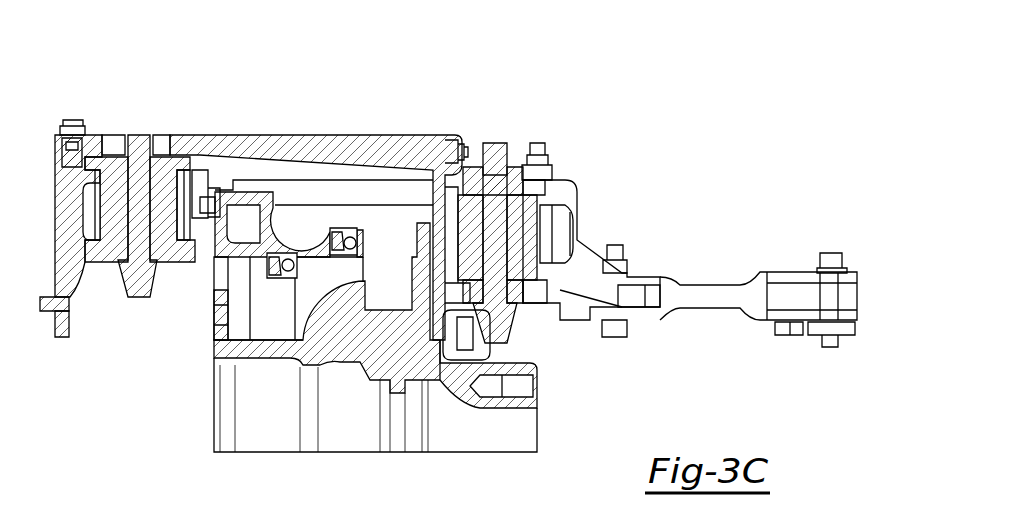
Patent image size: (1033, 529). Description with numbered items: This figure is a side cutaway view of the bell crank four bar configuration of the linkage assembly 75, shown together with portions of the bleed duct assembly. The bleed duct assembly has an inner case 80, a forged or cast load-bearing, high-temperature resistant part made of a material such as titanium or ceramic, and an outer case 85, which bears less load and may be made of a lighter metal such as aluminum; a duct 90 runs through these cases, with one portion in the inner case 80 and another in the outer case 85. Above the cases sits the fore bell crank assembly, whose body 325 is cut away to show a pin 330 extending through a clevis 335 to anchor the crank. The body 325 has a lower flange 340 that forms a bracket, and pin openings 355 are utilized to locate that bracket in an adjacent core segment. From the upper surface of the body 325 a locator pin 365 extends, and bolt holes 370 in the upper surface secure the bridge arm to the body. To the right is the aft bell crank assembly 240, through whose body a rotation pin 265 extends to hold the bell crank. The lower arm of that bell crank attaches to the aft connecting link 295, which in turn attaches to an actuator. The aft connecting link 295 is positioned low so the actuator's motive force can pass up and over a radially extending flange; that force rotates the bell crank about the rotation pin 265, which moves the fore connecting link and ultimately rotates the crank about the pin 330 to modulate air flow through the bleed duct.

The linkage assembly 75 is at (226, 255).
The inner case 80 is at (515, 367).
The outer case 85 is at (565, 385).
The duct 90 is at (388, 297).
The aft bell crank assembly 240 is at (580, 157).
The rotation pin 265 is at (498, 152).
The aft connecting link 295 is at (714, 284).
The body 325 is at (79, 101).
The pin 330 is at (143, 155).
The clevis 335 is at (112, 155).
The lower flange 340 is at (61, 337).
The pin openings 355 is at (66, 298).
The locator pin 365 is at (64, 148).
The bolt holes 370 is at (60, 163).